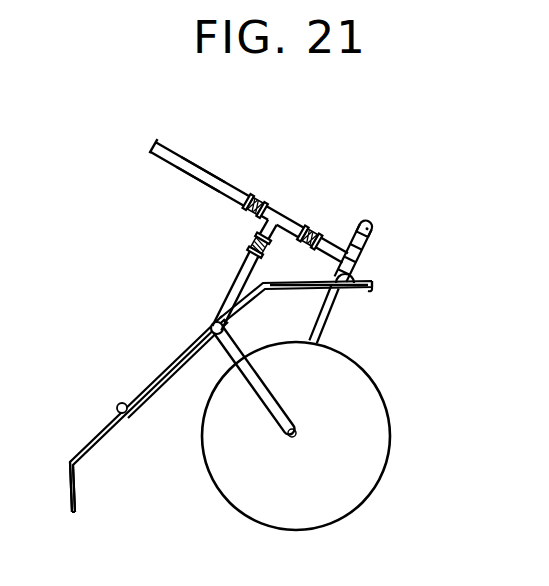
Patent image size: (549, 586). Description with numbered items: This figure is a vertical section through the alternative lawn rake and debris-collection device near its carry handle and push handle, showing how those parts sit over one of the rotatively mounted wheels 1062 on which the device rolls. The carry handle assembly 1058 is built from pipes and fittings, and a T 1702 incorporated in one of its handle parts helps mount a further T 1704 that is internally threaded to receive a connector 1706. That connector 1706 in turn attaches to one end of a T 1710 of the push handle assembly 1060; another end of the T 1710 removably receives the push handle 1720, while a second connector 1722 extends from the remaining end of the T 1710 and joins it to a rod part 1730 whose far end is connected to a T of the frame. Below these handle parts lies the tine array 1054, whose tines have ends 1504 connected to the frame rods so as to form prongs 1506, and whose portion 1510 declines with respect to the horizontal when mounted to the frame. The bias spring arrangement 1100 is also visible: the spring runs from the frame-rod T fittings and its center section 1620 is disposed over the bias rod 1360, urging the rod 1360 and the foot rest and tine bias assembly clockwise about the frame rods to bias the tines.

The tine array 1054 is at (122, 446).
The carry handle assembly 1058 is at (372, 215).
The push handle assembly 1060 is at (197, 150).
The wheels 1062 is at (372, 390).
The bias spring arrangement 1100 is at (160, 326).
The bias rod 1360 is at (114, 410).
The ends 1504 is at (360, 280).
The prongs 1506 is at (370, 290).
The portion 1510 is at (286, 283).
The center section 1620 is at (118, 400).
The T 1702 is at (360, 262).
The T 1704 is at (333, 243).
The connector 1706 is at (316, 230).
The T 1710 is at (260, 200).
The push handle 1720 is at (180, 165).
The connector 1722 is at (262, 244).
The rod part 1730 is at (233, 283).